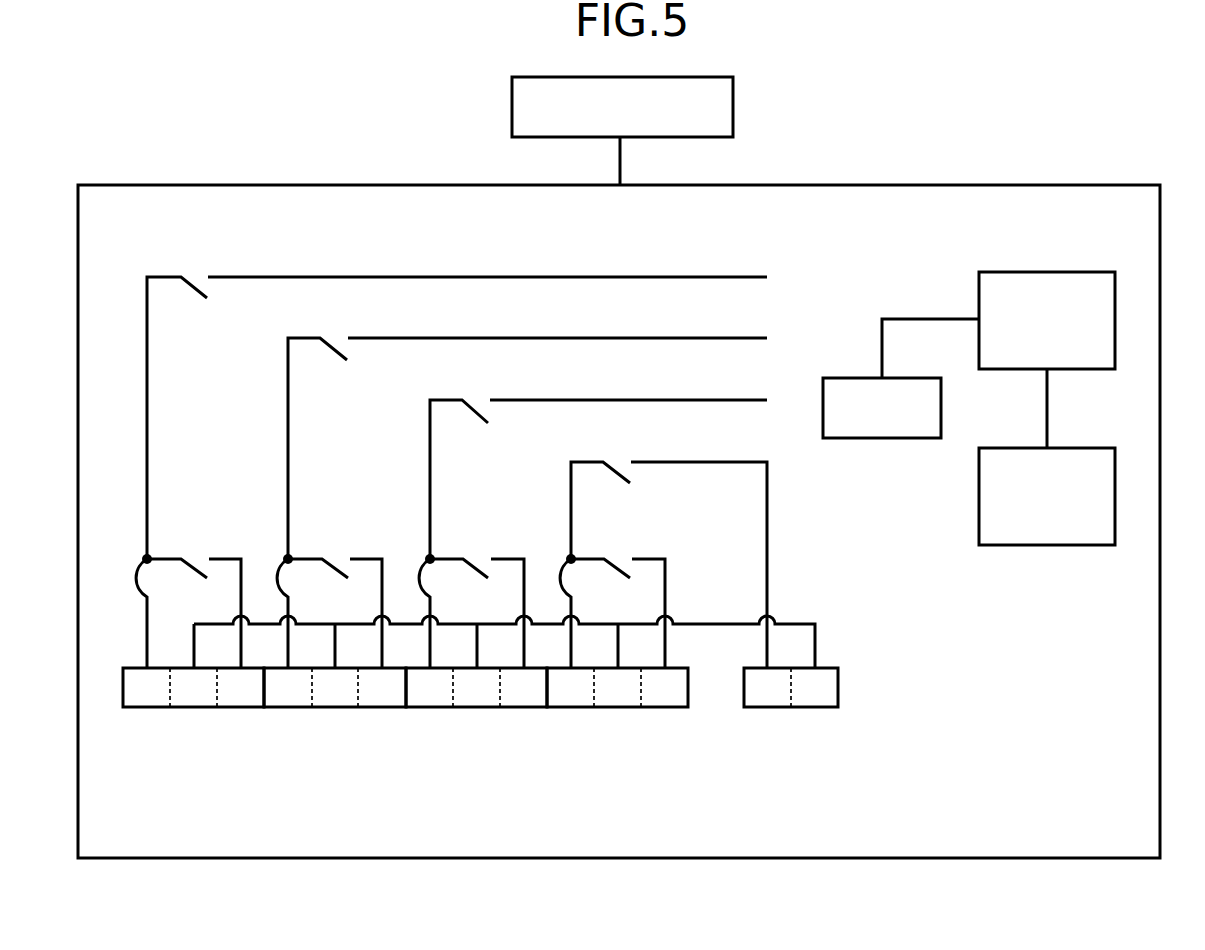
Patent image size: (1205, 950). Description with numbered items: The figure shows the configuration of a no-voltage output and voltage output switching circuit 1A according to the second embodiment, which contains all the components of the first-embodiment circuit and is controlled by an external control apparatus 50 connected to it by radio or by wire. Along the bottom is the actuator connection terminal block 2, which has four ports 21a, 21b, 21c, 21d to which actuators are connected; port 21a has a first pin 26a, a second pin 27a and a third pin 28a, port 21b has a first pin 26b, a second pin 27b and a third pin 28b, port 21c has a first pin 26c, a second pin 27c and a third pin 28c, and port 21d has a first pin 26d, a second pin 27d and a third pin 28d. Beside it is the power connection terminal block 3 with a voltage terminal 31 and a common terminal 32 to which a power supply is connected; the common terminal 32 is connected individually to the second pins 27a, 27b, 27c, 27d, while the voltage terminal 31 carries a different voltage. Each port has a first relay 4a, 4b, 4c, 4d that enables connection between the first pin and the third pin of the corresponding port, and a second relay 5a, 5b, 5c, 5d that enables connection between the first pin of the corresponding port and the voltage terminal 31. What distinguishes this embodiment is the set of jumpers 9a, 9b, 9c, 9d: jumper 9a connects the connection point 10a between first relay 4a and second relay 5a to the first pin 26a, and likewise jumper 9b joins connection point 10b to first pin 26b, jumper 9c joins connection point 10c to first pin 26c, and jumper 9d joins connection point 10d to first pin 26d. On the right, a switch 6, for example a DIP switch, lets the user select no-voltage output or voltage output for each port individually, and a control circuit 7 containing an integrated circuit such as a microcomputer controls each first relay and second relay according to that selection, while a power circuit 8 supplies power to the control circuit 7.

The external control apparatus 50 is at (697, 77).
The no-voltage output and voltage output switching circuit 1A is at (1122, 185).
The second relay 5a is at (197, 280).
The second relay 5b is at (338, 342).
The second relay 5c is at (480, 404).
The second relay 5d is at (621, 466).
The first relay 4a is at (200, 557).
The first relay 4b is at (341, 557).
The first relay 4c is at (482, 557).
The first relay 4d is at (624, 557).
The jumper 9a is at (137, 577).
The jumper 9b is at (278, 578).
The jumper 9c is at (419, 578).
The jumper 9d is at (559, 578).
The connection point 10a is at (146, 558).
The connection point 10b is at (287, 558).
The connection point 10c is at (428, 558).
The connection point 10d is at (569, 558).
The first pin 26a is at (149, 708).
The second pin 27a is at (196, 708).
The third pin 28a is at (239, 713).
The first pin 26b is at (290, 708).
The second pin 27b is at (337, 708).
The third pin 28b is at (380, 713).
The first pin 26c is at (432, 708).
The second pin 27c is at (479, 708).
The third pin 28c is at (521, 713).
The first pin 26d is at (573, 708).
The second pin 27d is at (620, 708).
The third pin 28d is at (663, 713).
The port 21a is at (193, 735).
The port 21b is at (335, 735).
The port 21c is at (476, 735).
The port 21d is at (617, 735).
The actuator connection terminal block 2 is at (405, 755).
The voltage terminal 31 is at (770, 708).
The common terminal 32 is at (809, 713).
The power connection terminal block 3 is at (791, 735).
The control circuit 7 is at (1080, 272).
The switch 6 is at (910, 378).
The power circuit 8 is at (1080, 448).